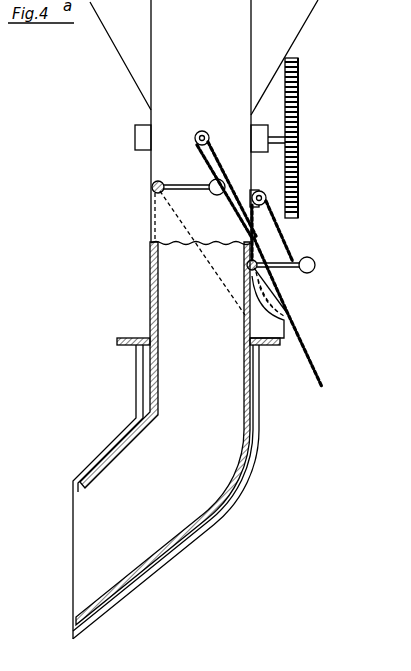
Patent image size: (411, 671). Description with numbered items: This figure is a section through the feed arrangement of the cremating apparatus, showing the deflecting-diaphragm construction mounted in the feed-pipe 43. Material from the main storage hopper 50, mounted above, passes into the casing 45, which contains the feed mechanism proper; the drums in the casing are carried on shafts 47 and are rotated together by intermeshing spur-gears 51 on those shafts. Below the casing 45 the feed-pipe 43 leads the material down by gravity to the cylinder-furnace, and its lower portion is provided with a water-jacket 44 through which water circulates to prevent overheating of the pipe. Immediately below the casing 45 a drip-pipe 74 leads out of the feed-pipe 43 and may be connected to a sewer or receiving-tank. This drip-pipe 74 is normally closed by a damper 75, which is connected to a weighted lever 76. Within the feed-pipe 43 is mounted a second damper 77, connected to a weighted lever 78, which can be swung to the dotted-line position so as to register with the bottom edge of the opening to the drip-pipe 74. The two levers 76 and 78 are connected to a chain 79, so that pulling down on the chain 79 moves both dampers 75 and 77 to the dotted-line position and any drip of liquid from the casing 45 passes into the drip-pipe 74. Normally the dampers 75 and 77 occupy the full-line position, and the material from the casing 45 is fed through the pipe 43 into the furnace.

The feed-pipe 43 is at (141, 492).
The water-jacket 44 is at (174, 492).
The casing 45 is at (193, 122).
The shaft 47 is at (277, 138).
The main storage hopper 50 is at (204, 57).
The spur-gear 51 is at (304, 138).
The drip-pipe 74 is at (275, 327).
The damper 75 is at (251, 287).
The weighted lever 76 is at (295, 259).
The damper 77 is at (159, 299).
The weighted lever 78 is at (198, 247).
The chain 79 is at (266, 259).